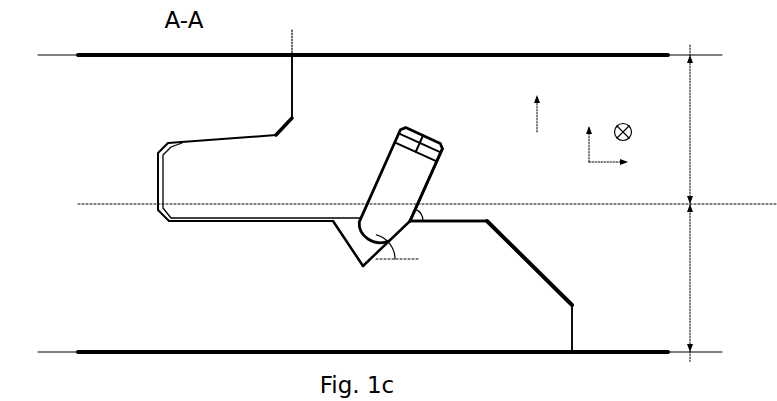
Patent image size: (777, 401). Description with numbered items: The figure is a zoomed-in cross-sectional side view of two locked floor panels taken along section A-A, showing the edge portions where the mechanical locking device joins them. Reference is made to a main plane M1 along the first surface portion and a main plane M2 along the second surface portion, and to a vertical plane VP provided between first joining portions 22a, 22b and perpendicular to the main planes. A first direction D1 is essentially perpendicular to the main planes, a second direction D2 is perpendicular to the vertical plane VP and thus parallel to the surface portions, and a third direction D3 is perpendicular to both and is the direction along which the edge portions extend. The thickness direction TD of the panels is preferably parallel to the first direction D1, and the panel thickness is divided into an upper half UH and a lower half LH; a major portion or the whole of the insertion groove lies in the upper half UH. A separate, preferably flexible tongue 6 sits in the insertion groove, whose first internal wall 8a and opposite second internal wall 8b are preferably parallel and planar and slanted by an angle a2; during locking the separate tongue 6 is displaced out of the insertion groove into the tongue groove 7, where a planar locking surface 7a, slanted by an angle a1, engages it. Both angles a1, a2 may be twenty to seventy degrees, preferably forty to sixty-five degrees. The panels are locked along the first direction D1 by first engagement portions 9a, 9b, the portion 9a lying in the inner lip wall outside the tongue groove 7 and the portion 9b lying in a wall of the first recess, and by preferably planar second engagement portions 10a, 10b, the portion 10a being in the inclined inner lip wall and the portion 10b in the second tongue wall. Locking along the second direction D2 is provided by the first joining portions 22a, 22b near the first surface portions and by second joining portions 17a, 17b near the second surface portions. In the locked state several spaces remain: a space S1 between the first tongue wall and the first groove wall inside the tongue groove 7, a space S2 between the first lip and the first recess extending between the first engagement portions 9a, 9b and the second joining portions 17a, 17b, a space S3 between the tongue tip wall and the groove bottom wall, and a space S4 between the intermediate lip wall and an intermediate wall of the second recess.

The main plane M1 is at (347, 36).
The main plane M2 is at (393, 187).
The vertical plane VP is at (292, 31).
The first joining portion 22a is at (292, 86).
The first joining portion 22b is at (292, 84).
The space S4 is at (285, 128).
The second engagement portion 10b is at (193, 142).
The second engagement portion 10a is at (190, 147).
The space S3 is at (158, 165).
The space S1 is at (252, 222).
The tongue groove 7 is at (349, 229).
The locking surface 7a is at (383, 242).
The angle a1 is at (402, 245).
The separate tongue 6 is at (392, 186).
The second internal wall 8b is at (397, 147).
The first internal wall 8a is at (425, 172).
The angle a2 is at (421, 208).
The first engagement portion 9a is at (476, 221).
The first engagement portion 9b is at (464, 222).
The space S2 is at (535, 268).
The second joining portion 17a is at (572, 322).
The second joining portion 17b is at (572, 330).
The thickness direction TD is at (536, 100).
The first direction D1 is at (592, 131).
The second direction D2 is at (624, 164).
The third direction D3 is at (624, 121).
The upper half UH is at (717, 124).
The lower half LH is at (717, 283).